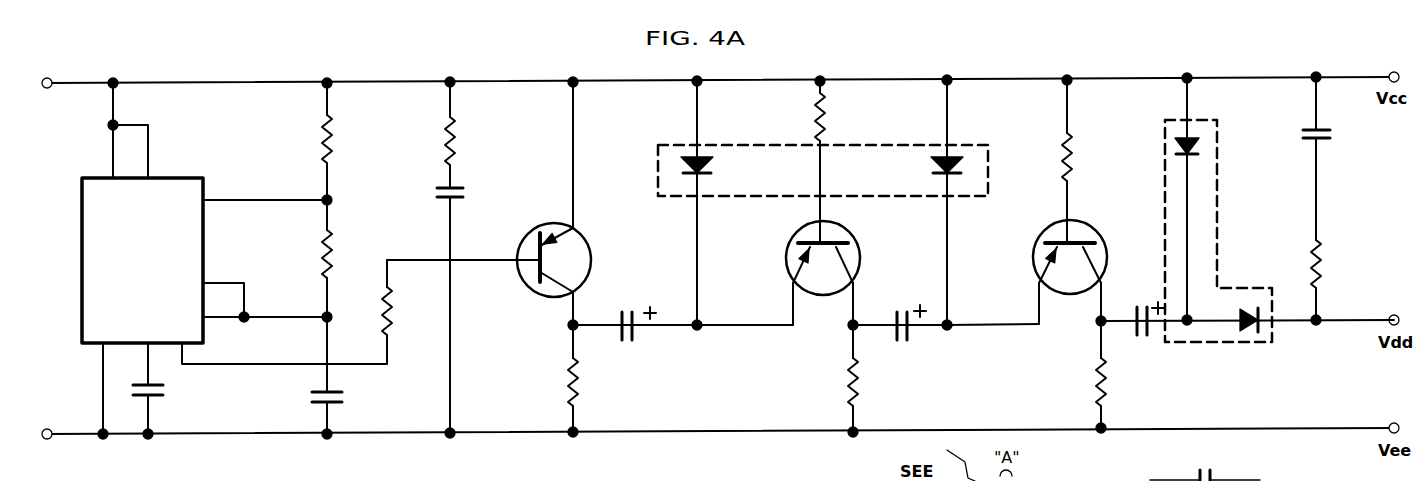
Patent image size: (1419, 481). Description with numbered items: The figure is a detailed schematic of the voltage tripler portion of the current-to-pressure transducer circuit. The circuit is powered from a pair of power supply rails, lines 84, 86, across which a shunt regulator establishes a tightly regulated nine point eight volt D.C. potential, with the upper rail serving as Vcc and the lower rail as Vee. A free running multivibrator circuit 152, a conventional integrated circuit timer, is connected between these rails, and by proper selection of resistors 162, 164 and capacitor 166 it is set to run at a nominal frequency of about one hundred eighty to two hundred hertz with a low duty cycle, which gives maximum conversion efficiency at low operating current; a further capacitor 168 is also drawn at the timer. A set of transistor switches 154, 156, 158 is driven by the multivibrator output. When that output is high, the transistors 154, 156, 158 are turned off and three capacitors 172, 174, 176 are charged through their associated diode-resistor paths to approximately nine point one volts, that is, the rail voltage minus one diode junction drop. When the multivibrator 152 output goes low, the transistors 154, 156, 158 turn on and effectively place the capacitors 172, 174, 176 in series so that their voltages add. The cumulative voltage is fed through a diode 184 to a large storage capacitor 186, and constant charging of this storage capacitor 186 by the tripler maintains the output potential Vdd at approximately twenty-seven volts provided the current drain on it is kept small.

The line 84 is at (188, 82).
The line 86 is at (275, 437).
The free running multivibrator circuit 152 is at (237, 258).
The transistor switch 154 is at (592, 252).
The transistor switch 156 is at (852, 254).
The transistor switch 158 is at (1100, 250).
The resistor 162 is at (331, 151).
The resistor 164 is at (331, 258).
The capacitor 166 is at (345, 393).
The capacitor 168 is at (166, 386).
The capacitor 172 is at (632, 342).
The capacitor 174 is at (901, 342).
The capacitor 176 is at (1142, 337).
The diode 184 is at (1250, 335).
The storage capacitor 186 is at (1333, 133).